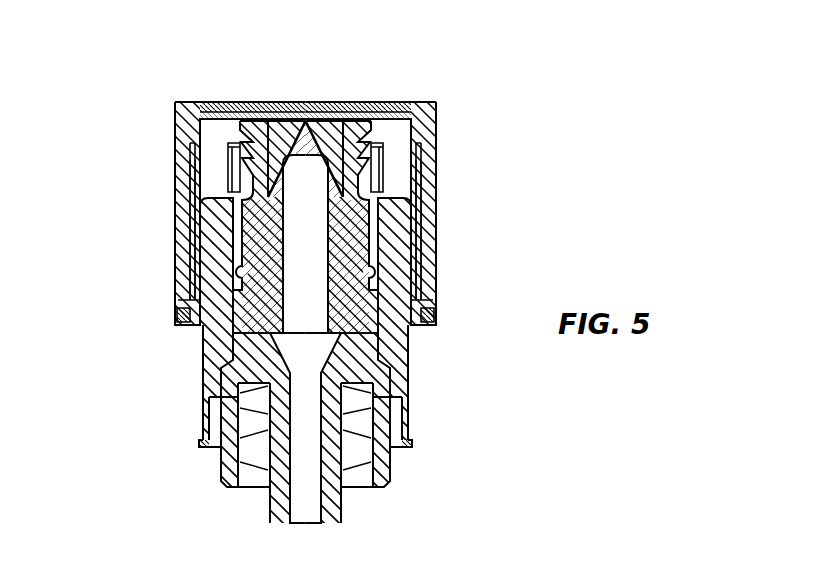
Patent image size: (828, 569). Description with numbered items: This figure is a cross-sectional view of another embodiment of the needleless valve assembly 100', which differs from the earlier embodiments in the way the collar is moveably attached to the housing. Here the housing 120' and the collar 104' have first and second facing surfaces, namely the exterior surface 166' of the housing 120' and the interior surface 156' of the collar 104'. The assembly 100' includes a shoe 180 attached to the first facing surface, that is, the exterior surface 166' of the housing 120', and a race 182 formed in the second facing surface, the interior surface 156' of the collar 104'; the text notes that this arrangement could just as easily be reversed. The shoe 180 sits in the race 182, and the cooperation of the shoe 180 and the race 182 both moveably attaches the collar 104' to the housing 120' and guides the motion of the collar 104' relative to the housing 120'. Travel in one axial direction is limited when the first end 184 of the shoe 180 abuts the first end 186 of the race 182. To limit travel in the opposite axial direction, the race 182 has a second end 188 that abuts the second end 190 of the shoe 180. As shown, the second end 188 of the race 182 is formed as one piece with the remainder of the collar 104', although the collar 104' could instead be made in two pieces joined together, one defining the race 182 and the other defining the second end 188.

The assembly 100' is at (318, 273).
The collar 104' is at (366, 213).
The interior surface 156' is at (344, 88).
The first end 186 is at (203, 142).
The race 182 is at (200, 168).
The first end 184 is at (193, 210).
The shoe 180 is at (200, 240).
The second end 190 is at (233, 290).
The second end 188 is at (180, 319).
The exterior surface 166' is at (253, 400).
The housing 120' is at (361, 428).